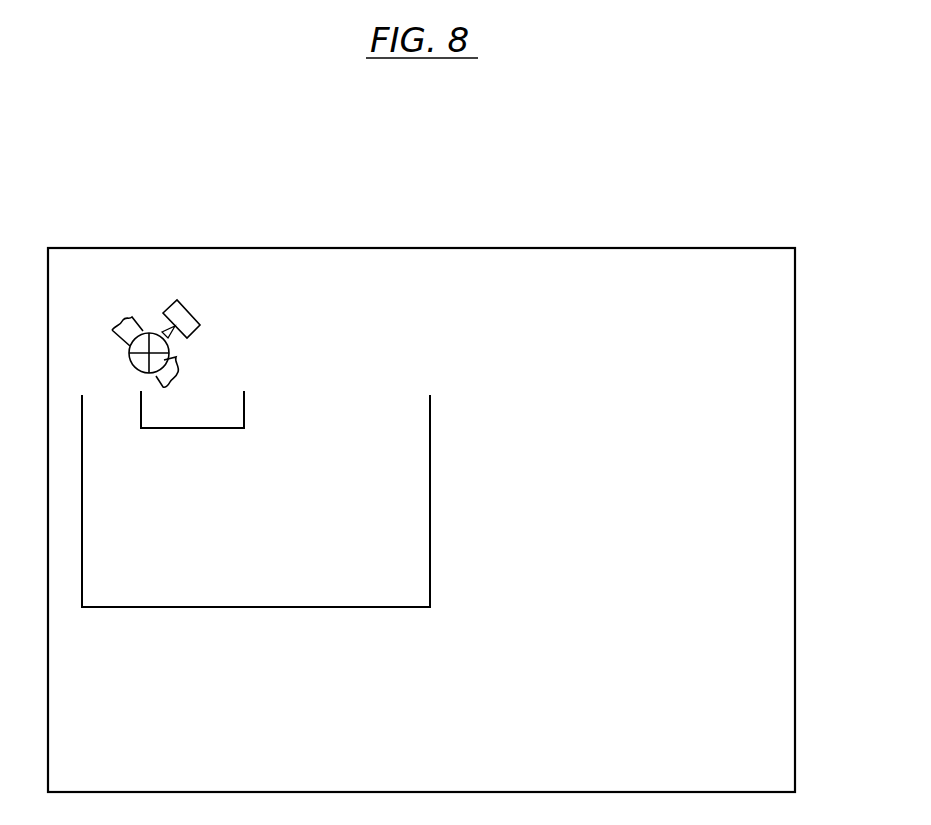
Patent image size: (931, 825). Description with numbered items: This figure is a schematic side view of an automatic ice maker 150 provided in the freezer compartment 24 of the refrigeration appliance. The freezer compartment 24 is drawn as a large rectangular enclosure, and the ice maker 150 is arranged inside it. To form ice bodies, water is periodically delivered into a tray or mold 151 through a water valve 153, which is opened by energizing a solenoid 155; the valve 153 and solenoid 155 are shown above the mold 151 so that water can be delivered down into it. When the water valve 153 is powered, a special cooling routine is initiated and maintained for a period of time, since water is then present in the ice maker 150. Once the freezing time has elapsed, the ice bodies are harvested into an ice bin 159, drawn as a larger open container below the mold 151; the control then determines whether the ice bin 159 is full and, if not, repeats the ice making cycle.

The freezer compartment 24 is at (783, 465).
The automatic ice maker 150 is at (478, 332).
The tray or mold 151 is at (245, 408).
The water valve 153 is at (166, 344).
The solenoid 155 is at (191, 307).
The ice bin 159 is at (431, 472).